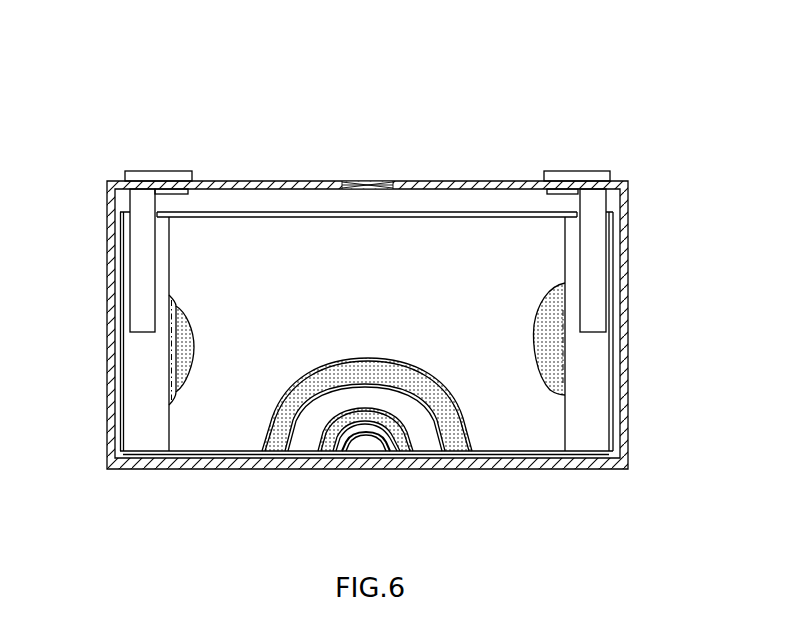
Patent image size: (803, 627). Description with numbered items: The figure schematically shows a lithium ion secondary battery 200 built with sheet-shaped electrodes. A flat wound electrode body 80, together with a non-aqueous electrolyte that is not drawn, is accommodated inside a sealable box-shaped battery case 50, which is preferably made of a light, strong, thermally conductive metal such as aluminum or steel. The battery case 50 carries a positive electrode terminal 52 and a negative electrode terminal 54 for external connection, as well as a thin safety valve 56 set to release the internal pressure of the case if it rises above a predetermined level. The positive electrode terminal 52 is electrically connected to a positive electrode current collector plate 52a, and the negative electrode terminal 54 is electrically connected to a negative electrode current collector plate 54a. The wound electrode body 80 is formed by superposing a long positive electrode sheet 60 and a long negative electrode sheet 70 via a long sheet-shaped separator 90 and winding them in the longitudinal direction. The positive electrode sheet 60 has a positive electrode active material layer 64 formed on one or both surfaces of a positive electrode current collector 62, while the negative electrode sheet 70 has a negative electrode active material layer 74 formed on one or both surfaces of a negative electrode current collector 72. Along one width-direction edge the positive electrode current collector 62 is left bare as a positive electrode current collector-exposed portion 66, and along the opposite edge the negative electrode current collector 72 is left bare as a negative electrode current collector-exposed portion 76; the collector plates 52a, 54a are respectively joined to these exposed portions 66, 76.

The lithium ion secondary battery 200 is at (97, 46).
The battery case 50 is at (107, 178).
The positive electrode terminal 52 is at (168, 171).
The positive electrode current collector plate 52a is at (143, 250).
The negative electrode terminal 54 is at (587, 171).
The negative electrode current collector plate 54a is at (597, 245).
The safety valve 56 is at (376, 181).
The positive electrode sheet 60 is at (277, 442).
The positive electrode current collector 62 is at (122, 357).
The positive electrode active material layer 64 is at (194, 323).
The positive electrode current collector-exposed portion 66 is at (135, 423).
The negative electrode sheet 70 is at (337, 443).
The negative electrode current collector 72 is at (615, 356).
The negative electrode active material layer 74 is at (535, 318).
The negative electrode current collector-exposed portion 76 is at (597, 421).
The wound electrode body 80 is at (291, 208).
The separator 90 is at (310, 442).